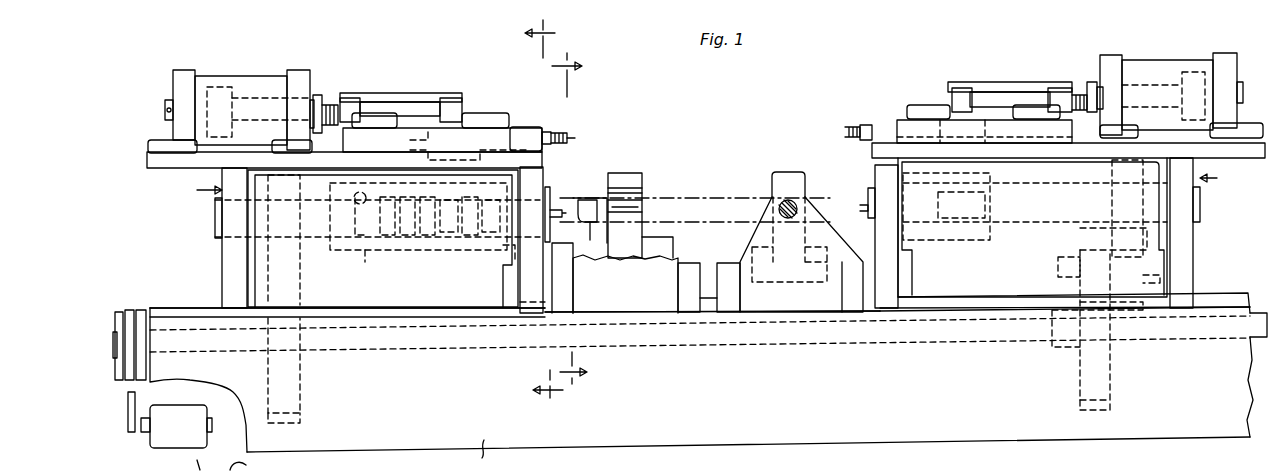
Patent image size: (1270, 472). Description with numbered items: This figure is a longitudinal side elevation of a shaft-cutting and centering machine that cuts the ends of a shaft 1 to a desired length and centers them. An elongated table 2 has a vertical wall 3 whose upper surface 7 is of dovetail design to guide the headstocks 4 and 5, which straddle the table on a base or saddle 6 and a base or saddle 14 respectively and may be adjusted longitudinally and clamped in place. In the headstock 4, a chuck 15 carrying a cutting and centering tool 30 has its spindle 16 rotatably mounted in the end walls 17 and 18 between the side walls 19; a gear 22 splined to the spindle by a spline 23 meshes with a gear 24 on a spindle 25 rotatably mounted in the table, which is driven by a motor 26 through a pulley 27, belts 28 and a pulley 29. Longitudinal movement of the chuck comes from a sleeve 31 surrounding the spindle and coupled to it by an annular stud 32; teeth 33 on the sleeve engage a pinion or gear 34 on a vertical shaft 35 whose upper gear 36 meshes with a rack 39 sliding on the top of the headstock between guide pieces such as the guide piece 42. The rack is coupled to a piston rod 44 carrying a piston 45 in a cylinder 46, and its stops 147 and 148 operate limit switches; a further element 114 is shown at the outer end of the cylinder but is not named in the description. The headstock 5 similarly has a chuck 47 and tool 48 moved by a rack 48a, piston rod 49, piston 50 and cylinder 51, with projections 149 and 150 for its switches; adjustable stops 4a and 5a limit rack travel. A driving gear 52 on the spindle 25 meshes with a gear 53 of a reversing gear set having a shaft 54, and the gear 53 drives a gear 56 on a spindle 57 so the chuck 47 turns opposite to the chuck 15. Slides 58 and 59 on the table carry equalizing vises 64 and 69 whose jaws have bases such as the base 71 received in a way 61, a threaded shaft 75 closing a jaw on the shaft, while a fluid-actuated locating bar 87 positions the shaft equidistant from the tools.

The shaft 1 is at (720, 198).
The table 2 is at (708, 372).
The vertical wall 3 is at (515, 246).
The headstock 4 is at (373, 218).
The adjustable stop 4a is at (572, 134).
The headstock 5 is at (1217, 178).
The adjustable stop 5a is at (845, 130).
The base or saddle 6 is at (527, 312).
The upper surface 7 is at (345, 312).
The base or saddle 14 is at (888, 307).
The chuck 15 is at (548, 187).
The spindle 16 is at (500, 240).
The end wall 17 is at (222, 258).
The end wall 18 is at (532, 240).
The side wall 19 is at (377, 238).
The gear 22 is at (300, 255).
The spline 23 is at (215, 215).
The gear 24 is at (300, 397).
The spindle 25 is at (450, 347).
The motor 26 is at (193, 437).
The pulley 27 is at (120, 312).
The belts 28 is at (140, 310).
The pulley 29 is at (128, 410).
The cutting and centering tool 30 is at (562, 210).
The sleeve 31 is at (418, 237).
The annular stud 32 is at (358, 192).
The teeth 33 is at (390, 195).
The pinion or gear 34 is at (440, 245).
The vertical shaft 35 is at (469, 157).
The gear 36 is at (442, 140).
The rack 39 is at (400, 85).
The guide piece 42 is at (520, 127).
The piston rod 44 is at (316, 95).
The piston 45 is at (218, 88).
The cylinder 46 is at (265, 78).
The chuck 47 is at (875, 170).
The cutting and centering tool 48 is at (868, 200).
The rack 48a is at (1000, 82).
The piston rod 49 is at (1092, 82).
The piston 50 is at (1192, 72).
The cylinder 51 is at (1160, 60).
The driving gear 52 is at (1110, 387).
The gear 53 is at (1160, 280).
The shaft 54 is at (1058, 270).
The gear 56 is at (1112, 168).
The spindle 57 is at (1200, 205).
The slide 58 is at (688, 263).
The slide 59 is at (728, 263).
The way 61 is at (775, 282).
The equalizing vise 64 is at (632, 173).
The equalizing vise 69 is at (782, 172).
The base 71 is at (812, 282).
The threaded shaft 75 is at (789, 218).
The locating bar 87 is at (585, 200).
The sensor 114 is at (165, 110).
The stop 147 is at (348, 98).
The stop 148 is at (447, 98).
The projection or stop 149 is at (960, 88).
The projection or stop 150 is at (1056, 88).